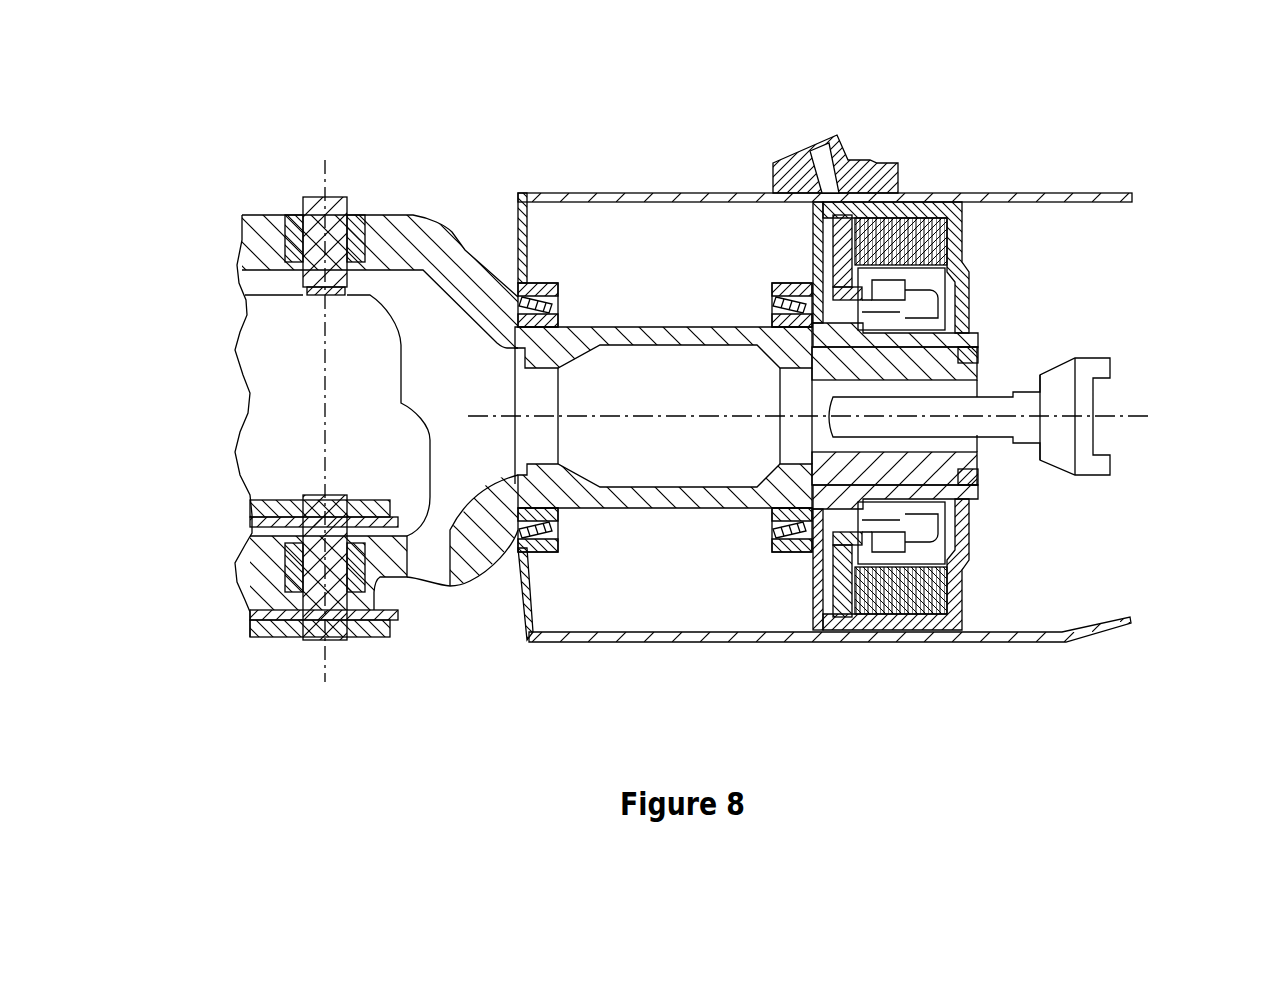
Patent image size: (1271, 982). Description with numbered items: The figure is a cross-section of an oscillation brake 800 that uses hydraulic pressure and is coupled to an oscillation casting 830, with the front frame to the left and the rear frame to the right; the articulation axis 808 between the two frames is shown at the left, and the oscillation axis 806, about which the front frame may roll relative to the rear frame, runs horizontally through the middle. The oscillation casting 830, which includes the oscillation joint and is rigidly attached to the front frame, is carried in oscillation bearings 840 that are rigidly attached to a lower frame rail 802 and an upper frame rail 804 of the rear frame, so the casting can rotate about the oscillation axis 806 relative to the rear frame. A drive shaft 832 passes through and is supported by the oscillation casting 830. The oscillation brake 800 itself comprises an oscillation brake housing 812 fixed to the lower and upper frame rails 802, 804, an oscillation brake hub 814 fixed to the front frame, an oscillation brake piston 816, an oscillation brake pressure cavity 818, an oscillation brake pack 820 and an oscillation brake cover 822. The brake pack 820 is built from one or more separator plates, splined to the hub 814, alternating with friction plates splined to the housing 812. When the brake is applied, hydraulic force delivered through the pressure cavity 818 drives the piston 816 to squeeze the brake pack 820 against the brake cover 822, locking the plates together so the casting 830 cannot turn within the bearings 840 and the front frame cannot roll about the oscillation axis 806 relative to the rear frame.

The oscillation brake 800 is at (1108, 283).
The lower frame rail 802 is at (1015, 642).
The upper frame rail 804 is at (1058, 193).
The oscillation axis 806 is at (1152, 420).
The articulation axis 808 is at (325, 380).
The oscillation brake housing 812 is at (814, 215).
The oscillation brake hub 814 is at (945, 313).
The oscillation brake piston 816 is at (833, 252).
The oscillation brake pressure cavity 818 is at (820, 165).
The oscillation brake pack 820 is at (950, 246).
The oscillation brake cover 822 is at (966, 285).
The oscillation casting 830 is at (657, 385).
The drive shaft 832 is at (1094, 358).
The oscillation bearings 840 is at (771, 280).